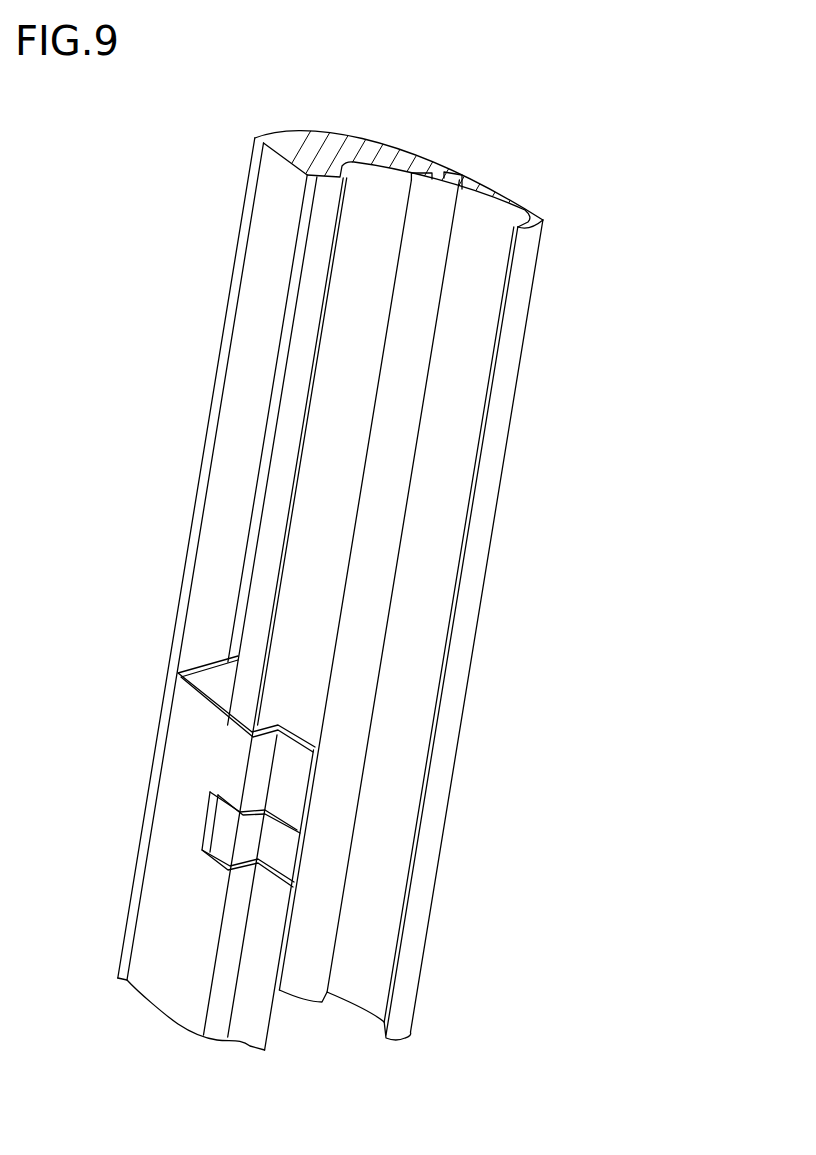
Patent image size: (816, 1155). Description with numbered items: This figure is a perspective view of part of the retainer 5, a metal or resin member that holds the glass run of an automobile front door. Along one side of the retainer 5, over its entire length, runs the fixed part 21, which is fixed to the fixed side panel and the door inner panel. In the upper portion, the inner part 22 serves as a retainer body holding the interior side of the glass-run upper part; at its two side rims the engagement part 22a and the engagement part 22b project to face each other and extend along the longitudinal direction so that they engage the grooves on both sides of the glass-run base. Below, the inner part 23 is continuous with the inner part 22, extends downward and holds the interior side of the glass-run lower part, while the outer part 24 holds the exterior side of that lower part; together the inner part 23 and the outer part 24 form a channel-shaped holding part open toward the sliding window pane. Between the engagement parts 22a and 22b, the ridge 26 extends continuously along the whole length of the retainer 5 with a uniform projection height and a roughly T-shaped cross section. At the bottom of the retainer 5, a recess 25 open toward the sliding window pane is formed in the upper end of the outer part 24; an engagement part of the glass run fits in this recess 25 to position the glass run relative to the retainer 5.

The retainer 5 is at (598, 205).
The fixed part 21 is at (236, 424).
The inner part 22 is at (482, 172).
The engagement part 22a is at (498, 284).
The engagement part 22b is at (332, 290).
The inner part 23 is at (367, 920).
The outer part 24 is at (156, 984).
The recess 25 is at (292, 828).
The ridge 26 is at (418, 204).